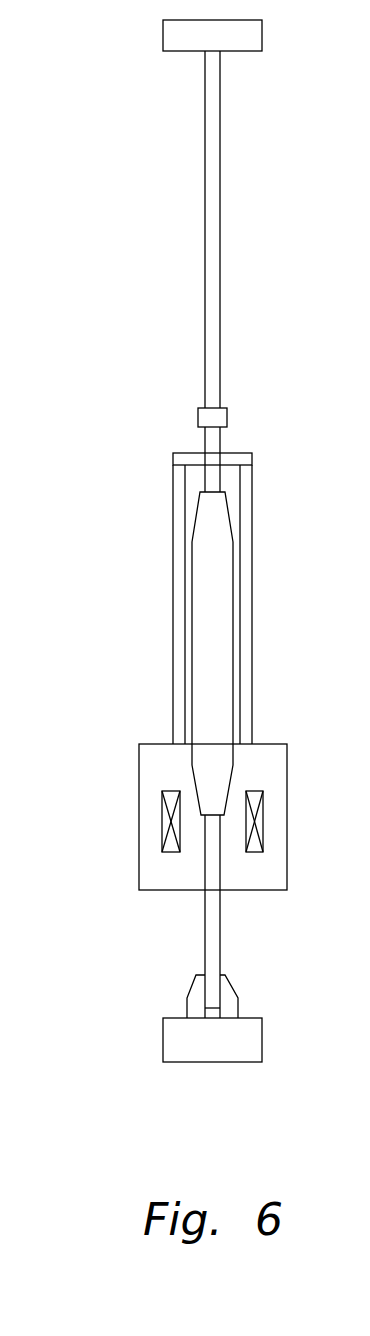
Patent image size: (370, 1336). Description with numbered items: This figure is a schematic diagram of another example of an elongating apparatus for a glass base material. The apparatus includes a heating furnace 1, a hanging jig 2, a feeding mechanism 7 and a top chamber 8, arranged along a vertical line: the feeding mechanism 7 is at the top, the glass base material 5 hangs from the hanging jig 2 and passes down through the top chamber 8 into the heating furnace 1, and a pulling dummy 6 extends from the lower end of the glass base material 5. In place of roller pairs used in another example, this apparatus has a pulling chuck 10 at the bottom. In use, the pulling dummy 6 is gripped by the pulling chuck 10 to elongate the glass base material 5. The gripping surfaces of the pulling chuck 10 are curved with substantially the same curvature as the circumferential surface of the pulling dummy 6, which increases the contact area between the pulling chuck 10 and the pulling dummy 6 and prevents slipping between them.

The heating furnace 1 is at (139, 820).
The hanging jig 2 is at (198, 418).
The glass base material 5 is at (192, 645).
The pulling dummy 6 is at (205, 913).
The feeding mechanism 7 is at (163, 33).
The top chamber 8 is at (173, 539).
The pulling chuck 10 is at (163, 1040).